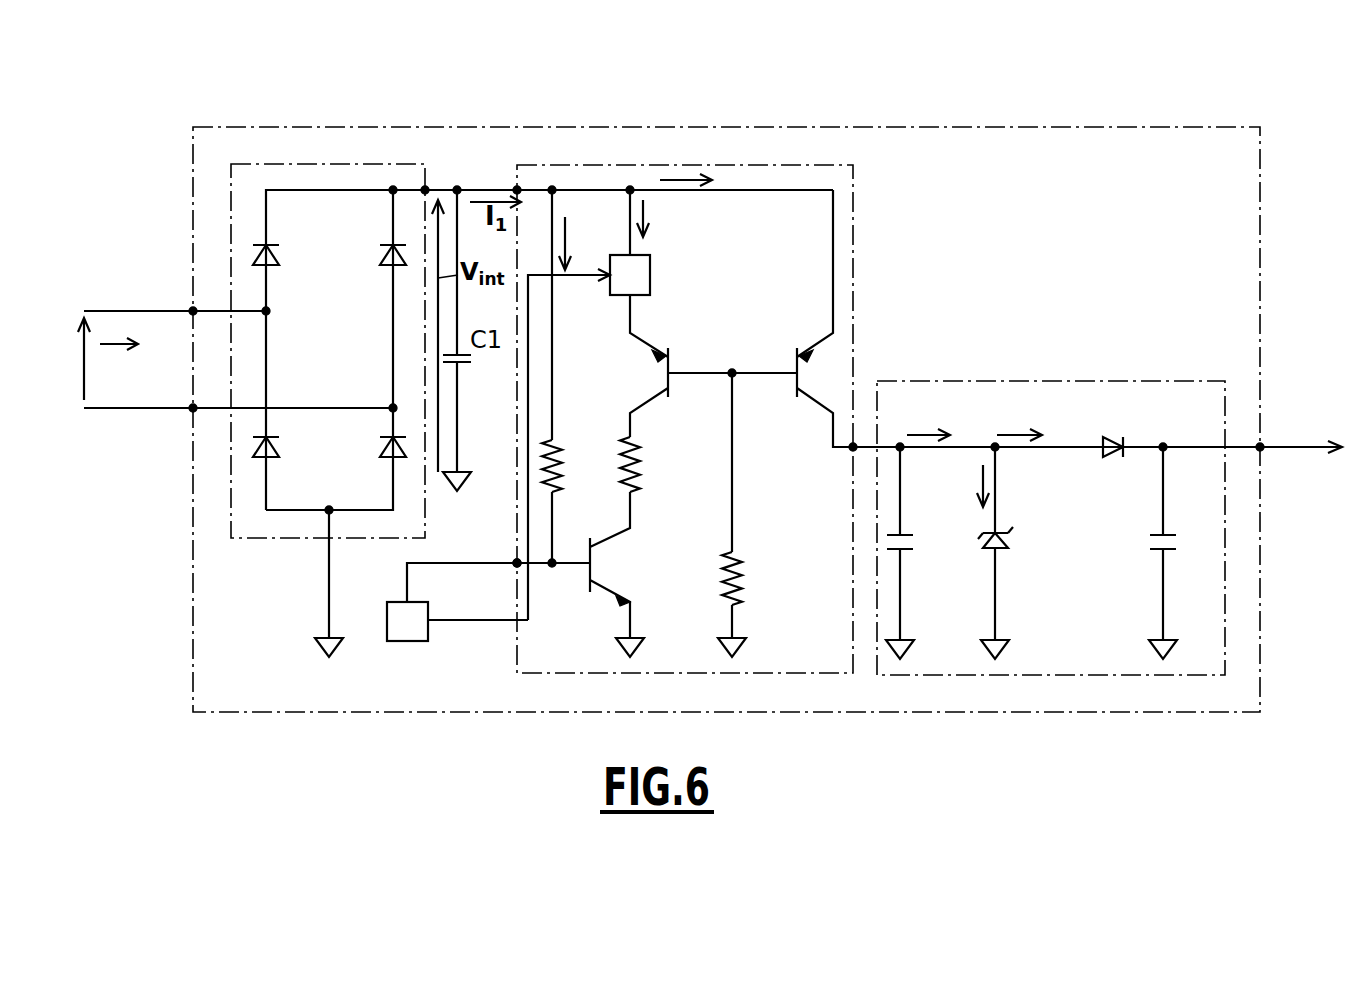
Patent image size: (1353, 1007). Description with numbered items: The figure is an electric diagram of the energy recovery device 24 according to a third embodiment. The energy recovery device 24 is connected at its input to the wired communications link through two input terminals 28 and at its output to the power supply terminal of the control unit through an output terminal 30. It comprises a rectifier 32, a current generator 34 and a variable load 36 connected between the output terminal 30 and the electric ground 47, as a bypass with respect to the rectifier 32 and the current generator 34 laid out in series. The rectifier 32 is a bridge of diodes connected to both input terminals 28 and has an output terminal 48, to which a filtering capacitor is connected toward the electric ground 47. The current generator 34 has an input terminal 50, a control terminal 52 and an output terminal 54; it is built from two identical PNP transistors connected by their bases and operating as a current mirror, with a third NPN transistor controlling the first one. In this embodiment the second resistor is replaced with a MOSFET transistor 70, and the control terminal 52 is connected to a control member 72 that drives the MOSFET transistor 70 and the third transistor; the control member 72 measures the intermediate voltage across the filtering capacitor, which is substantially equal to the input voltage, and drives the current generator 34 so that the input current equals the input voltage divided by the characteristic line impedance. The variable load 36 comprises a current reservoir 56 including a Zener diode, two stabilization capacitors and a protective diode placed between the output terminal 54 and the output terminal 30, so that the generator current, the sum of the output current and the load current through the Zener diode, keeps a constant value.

The energy recovery device 24 is at (932, 127).
The input terminals 28 is at (193, 311).
The output terminal 30 is at (1262, 452).
The rectifier 32 is at (408, 164).
The current generator 34 is at (770, 165).
The variable load 36 is at (1046, 381).
The electric ground 47 is at (318, 640).
The output terminal 48 is at (425, 190).
The input terminal 50 is at (512, 188).
The control terminal 52 is at (512, 566).
The output terminal 54 is at (850, 450).
The current reservoir 56 is at (1003, 497).
The MOSFET transistor 70 is at (652, 272).
The control member 72 is at (407, 641).